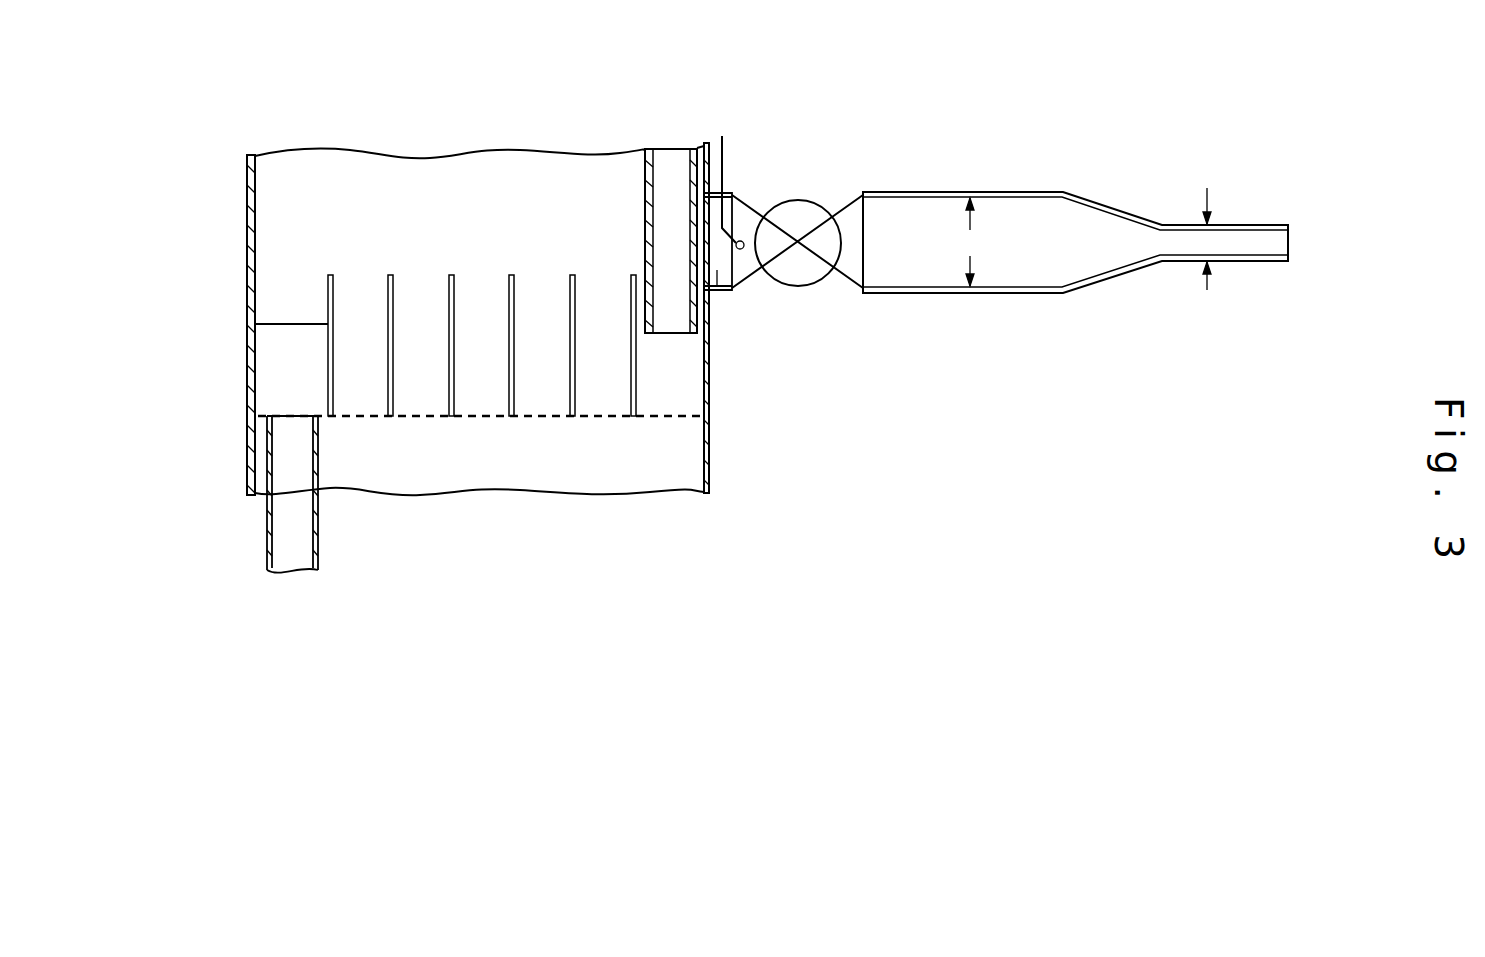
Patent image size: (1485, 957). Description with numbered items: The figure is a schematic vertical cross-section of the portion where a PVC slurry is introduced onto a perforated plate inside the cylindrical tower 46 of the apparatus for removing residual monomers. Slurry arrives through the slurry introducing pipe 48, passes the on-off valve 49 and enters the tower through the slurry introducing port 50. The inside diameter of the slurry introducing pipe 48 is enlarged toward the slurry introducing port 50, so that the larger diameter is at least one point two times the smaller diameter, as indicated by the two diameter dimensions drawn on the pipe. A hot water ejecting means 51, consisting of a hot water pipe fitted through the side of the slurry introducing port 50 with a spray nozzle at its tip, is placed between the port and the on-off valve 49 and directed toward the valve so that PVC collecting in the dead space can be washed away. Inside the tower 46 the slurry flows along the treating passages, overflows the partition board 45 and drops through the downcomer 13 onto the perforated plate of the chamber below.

The downcomer 13 is at (267, 525).
The partition board 45 is at (290, 326).
The cylindrical tower 46 is at (709, 448).
The slurry introducing pipe 48 is at (1262, 225).
The on-off valve 49 is at (806, 200).
The slurry introducing port 50 is at (728, 292).
The hot water ejecting means 51 is at (727, 172).